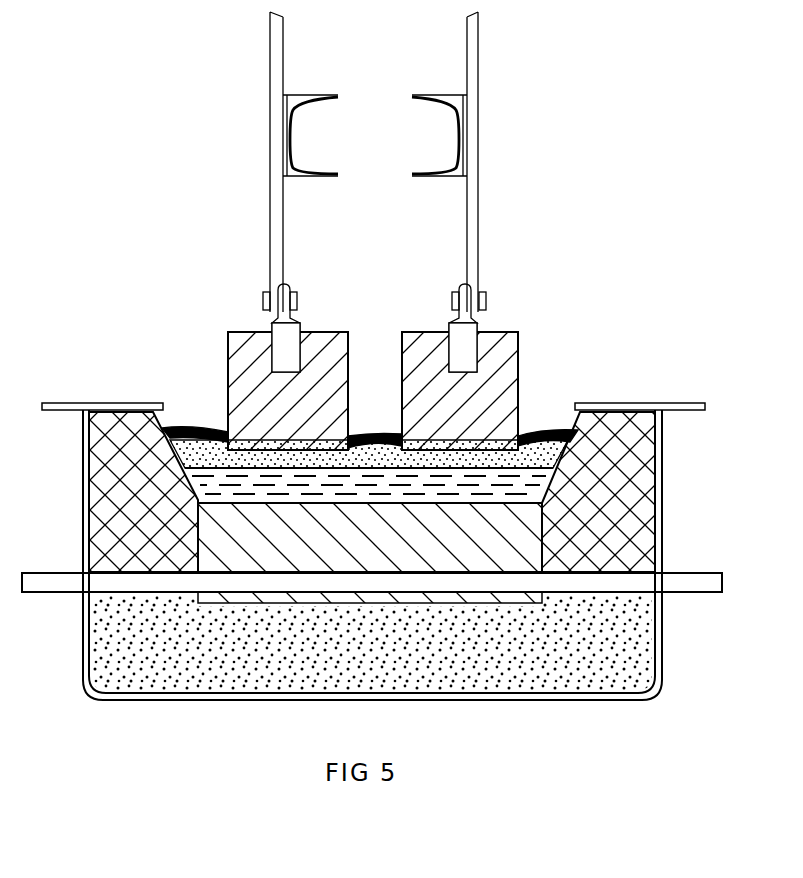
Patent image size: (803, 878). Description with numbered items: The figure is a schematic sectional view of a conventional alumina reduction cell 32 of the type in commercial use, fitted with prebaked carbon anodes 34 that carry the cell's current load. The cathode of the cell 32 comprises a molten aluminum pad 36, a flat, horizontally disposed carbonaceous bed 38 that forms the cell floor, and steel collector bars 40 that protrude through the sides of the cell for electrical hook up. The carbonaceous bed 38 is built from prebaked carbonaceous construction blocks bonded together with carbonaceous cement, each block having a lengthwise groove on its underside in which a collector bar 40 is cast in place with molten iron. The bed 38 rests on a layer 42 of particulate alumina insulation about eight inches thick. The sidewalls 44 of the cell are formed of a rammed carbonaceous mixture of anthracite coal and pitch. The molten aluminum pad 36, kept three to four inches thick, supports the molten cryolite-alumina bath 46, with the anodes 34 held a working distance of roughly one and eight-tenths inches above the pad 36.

The alumina reduction cell 32 is at (529, 212).
The prebaked carbon anodes 34 is at (512, 342).
The molten aluminum pad 36 is at (530, 480).
The carbonaceous bed 38 is at (530, 530).
The steel collector bars 40 is at (668, 584).
The layer of particulate alumina insulation 42 is at (607, 679).
The sidewalls 44 is at (120, 487).
The molten cryolite-alumina bath 46 is at (190, 427).